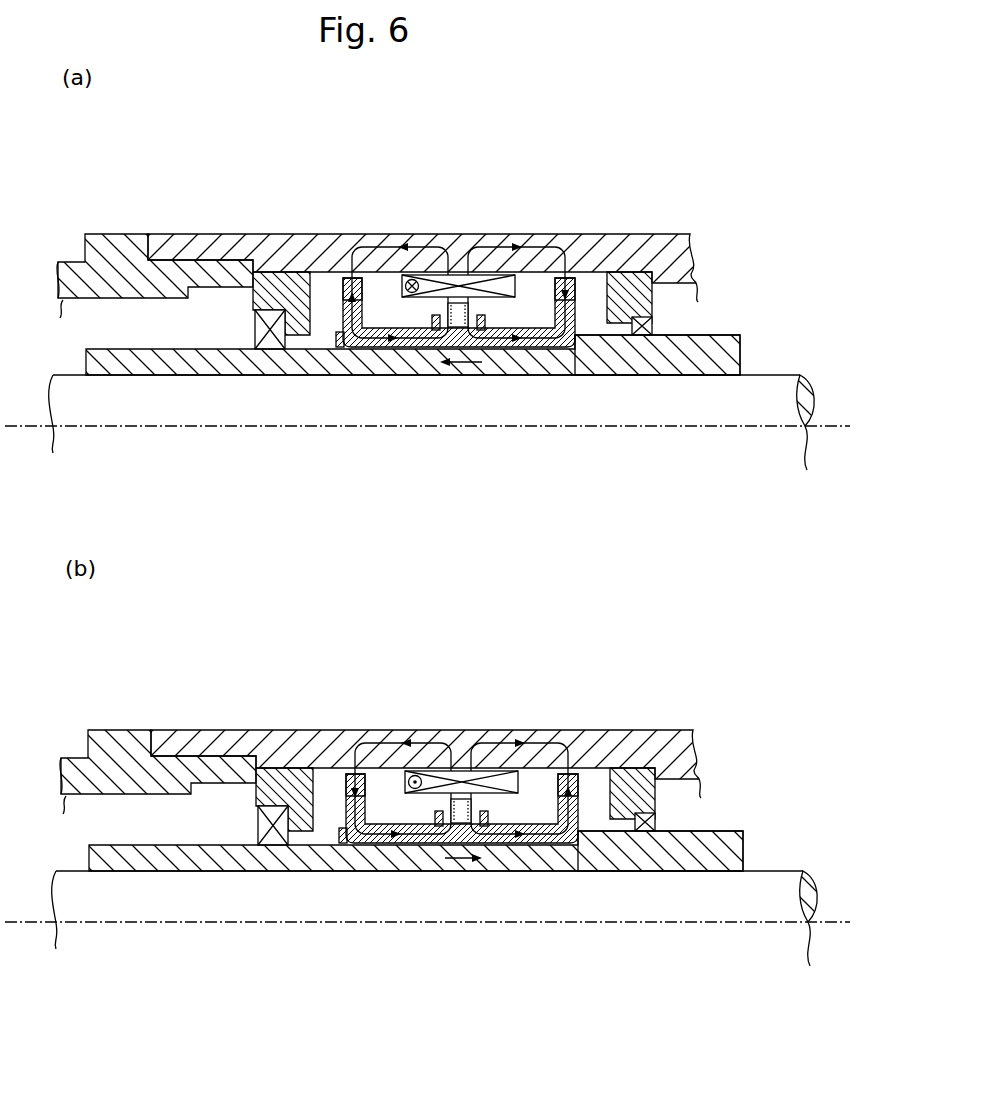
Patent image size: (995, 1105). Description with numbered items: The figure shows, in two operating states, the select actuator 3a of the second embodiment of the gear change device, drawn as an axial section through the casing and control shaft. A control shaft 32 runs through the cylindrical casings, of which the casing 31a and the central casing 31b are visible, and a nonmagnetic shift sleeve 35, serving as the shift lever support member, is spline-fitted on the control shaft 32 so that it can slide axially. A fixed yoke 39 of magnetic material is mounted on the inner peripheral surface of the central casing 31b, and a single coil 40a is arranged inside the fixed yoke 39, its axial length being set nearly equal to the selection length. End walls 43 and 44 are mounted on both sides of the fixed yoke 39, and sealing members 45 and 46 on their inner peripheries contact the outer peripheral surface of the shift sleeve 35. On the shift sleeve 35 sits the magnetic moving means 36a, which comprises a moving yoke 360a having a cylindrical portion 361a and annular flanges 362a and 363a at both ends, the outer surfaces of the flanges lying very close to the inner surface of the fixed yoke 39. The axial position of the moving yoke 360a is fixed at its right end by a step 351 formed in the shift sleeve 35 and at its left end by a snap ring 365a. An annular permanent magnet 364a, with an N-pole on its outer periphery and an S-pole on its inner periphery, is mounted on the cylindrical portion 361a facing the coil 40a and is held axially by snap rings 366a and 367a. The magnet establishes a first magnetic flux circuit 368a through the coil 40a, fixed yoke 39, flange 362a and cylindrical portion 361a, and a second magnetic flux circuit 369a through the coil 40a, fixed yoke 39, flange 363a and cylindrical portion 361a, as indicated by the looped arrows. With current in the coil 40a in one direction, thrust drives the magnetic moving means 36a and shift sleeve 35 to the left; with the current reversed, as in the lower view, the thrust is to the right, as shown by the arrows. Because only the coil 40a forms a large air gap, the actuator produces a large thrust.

In FIG. 6A, the select actuator 3a is at (476, 201).
In FIG. 6B, the select actuator 3a is at (462, 718).
In FIG. 6A, the cylindrical casing 31a is at (125, 243).
In FIG. 6B, the cylindrical casing 31a is at (158, 734).
In FIG. 6A, the central casing 31b is at (645, 233).
In FIG. 6B, the central casing 31b is at (429, 713).
In FIG. 6A, the control shaft 32 is at (72, 387).
In FIG. 6B, the control shaft 32 is at (419, 885).
In FIG. 6A, the shift sleeve 35 is at (153, 358).
In FIG. 6B, the shift sleeve 35 is at (416, 838).
In FIG. 6A, the step 351 is at (585, 353).
In FIG. 6B, the step 351 is at (660, 872).
In FIG. 6A, the magnetic moving means 36a is at (553, 280).
In FIG. 6B, the magnetic moving means 36a is at (468, 763).
In FIG. 6A, the fixed yoke 39 is at (288, 275).
In FIG. 6B, the fixed yoke 39 is at (277, 703).
In FIG. 6A, the coil 40a is at (441, 274).
In FIG. 6B, the coil 40a is at (461, 733).
In FIG. 6A, the end wall 43 is at (677, 283).
In FIG. 6B, the end wall 43 is at (675, 780).
In FIG. 6A, the end wall 44 is at (253, 300).
In FIG. 6B, the end wall 44 is at (247, 752).
In FIG. 6A, the sealing member 45 is at (652, 327).
In FIG. 6B, the sealing member 45 is at (687, 816).
In FIG. 6A, the sealing member 46 is at (255, 338).
In FIG. 6B, the sealing member 46 is at (232, 825).
In FIG. 6A, the moving yoke 360a is at (395, 318).
In FIG. 6B, the moving yoke 360a is at (461, 738).
In FIG. 6A, the cylindrical portion 361a is at (505, 348).
In FIG. 6B, the cylindrical portion 361a is at (508, 861).
In FIG. 6A, the flange 362a is at (610, 260).
In FIG. 6B, the flange 362a is at (607, 728).
In FIG. 6A, the flange 363a is at (352, 278).
In FIG. 6B, the flange 363a is at (329, 732).
In FIG. 6A, the permanent magnet 364a is at (526, 306).
In FIG. 6B, the permanent magnet 364a is at (518, 736).
In FIG. 6A, the snap ring 365a is at (338, 348).
In FIG. 6B, the snap ring 365a is at (311, 895).
In FIG. 6A, the snap ring 366a is at (470, 347).
In FIG. 6B, the snap ring 366a is at (482, 887).
In FIG. 6A, the snap ring 367a is at (427, 345).
In FIG. 6B, the snap ring 367a is at (425, 865).
In FIG. 6A, the first magnetic flux circuit 368a is at (553, 348).
In FIG. 6B, the first magnetic flux circuit 368a is at (556, 907).
In FIG. 6A, the second magnetic flux circuit 369a is at (367, 347).
In FIG. 6B, the second magnetic flux circuit 369a is at (389, 907).